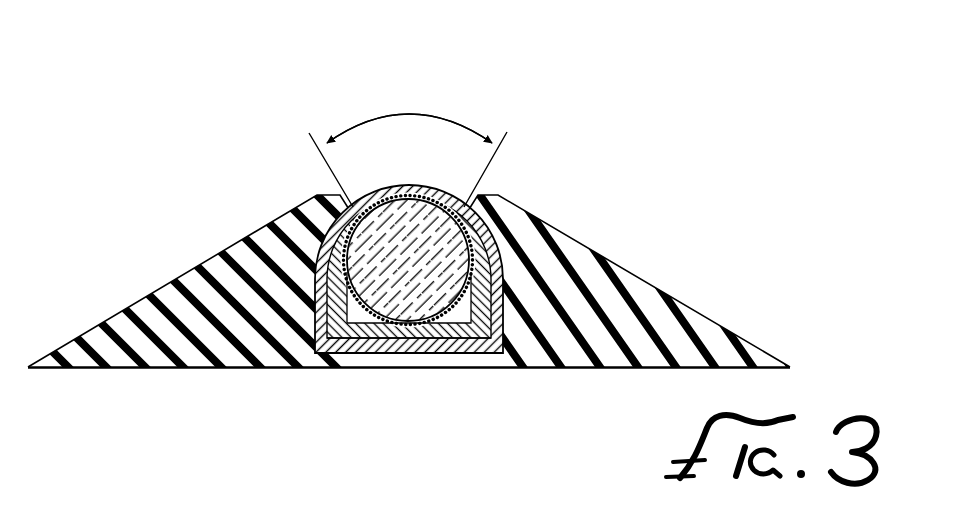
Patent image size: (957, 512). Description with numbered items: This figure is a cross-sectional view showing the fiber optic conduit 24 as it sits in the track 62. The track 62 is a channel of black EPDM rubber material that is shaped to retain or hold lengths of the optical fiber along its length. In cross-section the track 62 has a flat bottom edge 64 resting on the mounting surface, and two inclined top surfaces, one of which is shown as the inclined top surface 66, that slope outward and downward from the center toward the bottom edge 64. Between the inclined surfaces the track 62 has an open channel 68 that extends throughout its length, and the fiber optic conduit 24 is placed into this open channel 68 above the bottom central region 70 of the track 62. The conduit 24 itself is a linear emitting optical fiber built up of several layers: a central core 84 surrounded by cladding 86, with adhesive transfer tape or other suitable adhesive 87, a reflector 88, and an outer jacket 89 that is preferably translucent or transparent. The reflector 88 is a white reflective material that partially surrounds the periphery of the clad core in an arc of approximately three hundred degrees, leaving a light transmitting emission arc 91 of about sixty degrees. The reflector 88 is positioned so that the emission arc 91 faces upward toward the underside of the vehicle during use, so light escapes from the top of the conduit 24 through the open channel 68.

The conduit 24 is at (417, 240).
The track 62 is at (408, 284).
The bottom edge 64 is at (573, 368).
The inclined top surface 66 is at (648, 280).
The open channel 68 is at (487, 237).
The bottom central region 70 is at (423, 360).
The core 84 is at (440, 283).
The cladding 86 is at (374, 368).
The adhesive 87 is at (318, 322).
The reflector 88 is at (362, 332).
The jacket 89 is at (313, 230).
The emission arc 91 is at (407, 115).